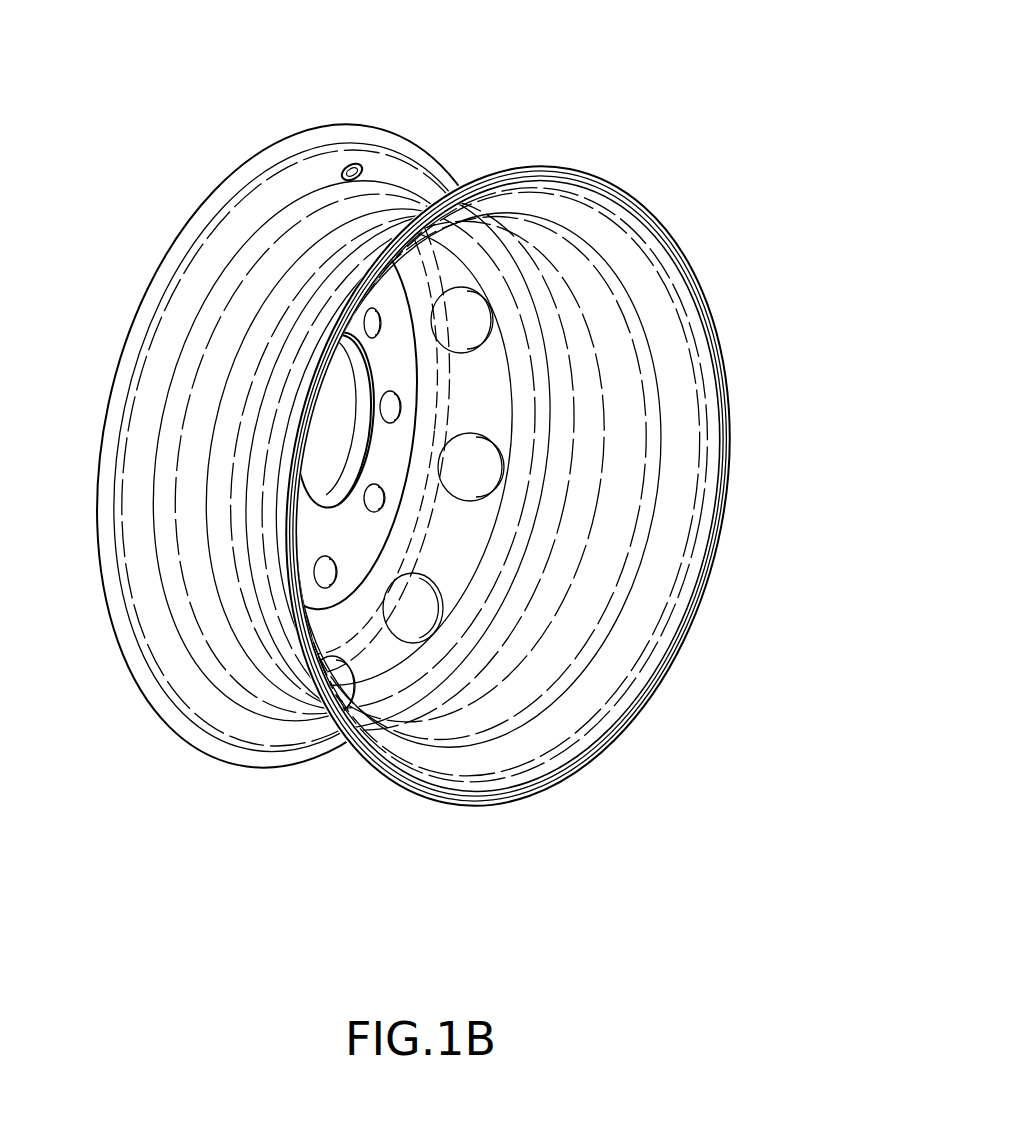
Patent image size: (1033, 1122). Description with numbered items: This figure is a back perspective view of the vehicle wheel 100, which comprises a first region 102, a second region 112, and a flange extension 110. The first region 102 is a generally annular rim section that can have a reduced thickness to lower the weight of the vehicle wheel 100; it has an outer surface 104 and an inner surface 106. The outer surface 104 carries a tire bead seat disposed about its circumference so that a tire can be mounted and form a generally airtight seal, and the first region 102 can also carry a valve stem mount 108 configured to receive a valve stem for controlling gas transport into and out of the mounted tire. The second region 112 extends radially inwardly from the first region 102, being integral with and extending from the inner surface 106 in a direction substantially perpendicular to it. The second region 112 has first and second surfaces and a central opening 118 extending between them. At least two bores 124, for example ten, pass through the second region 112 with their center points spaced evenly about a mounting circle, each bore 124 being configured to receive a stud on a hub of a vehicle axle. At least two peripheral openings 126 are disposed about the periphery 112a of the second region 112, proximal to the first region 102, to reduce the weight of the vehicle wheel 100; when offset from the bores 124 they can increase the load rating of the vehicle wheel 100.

The vehicle wheel 100 is at (597, 103).
The first region 102 is at (310, 234).
The outer surface 104 is at (423, 188).
The inner surface 106 is at (623, 328).
The valve stem mount 108 is at (365, 167).
The flange extension 110 is at (655, 688).
The second region 112 is at (397, 313).
The periphery 112a is at (500, 368).
The opening 118 is at (330, 470).
The bores 124 is at (380, 496).
The peripheral openings 126 is at (420, 603).